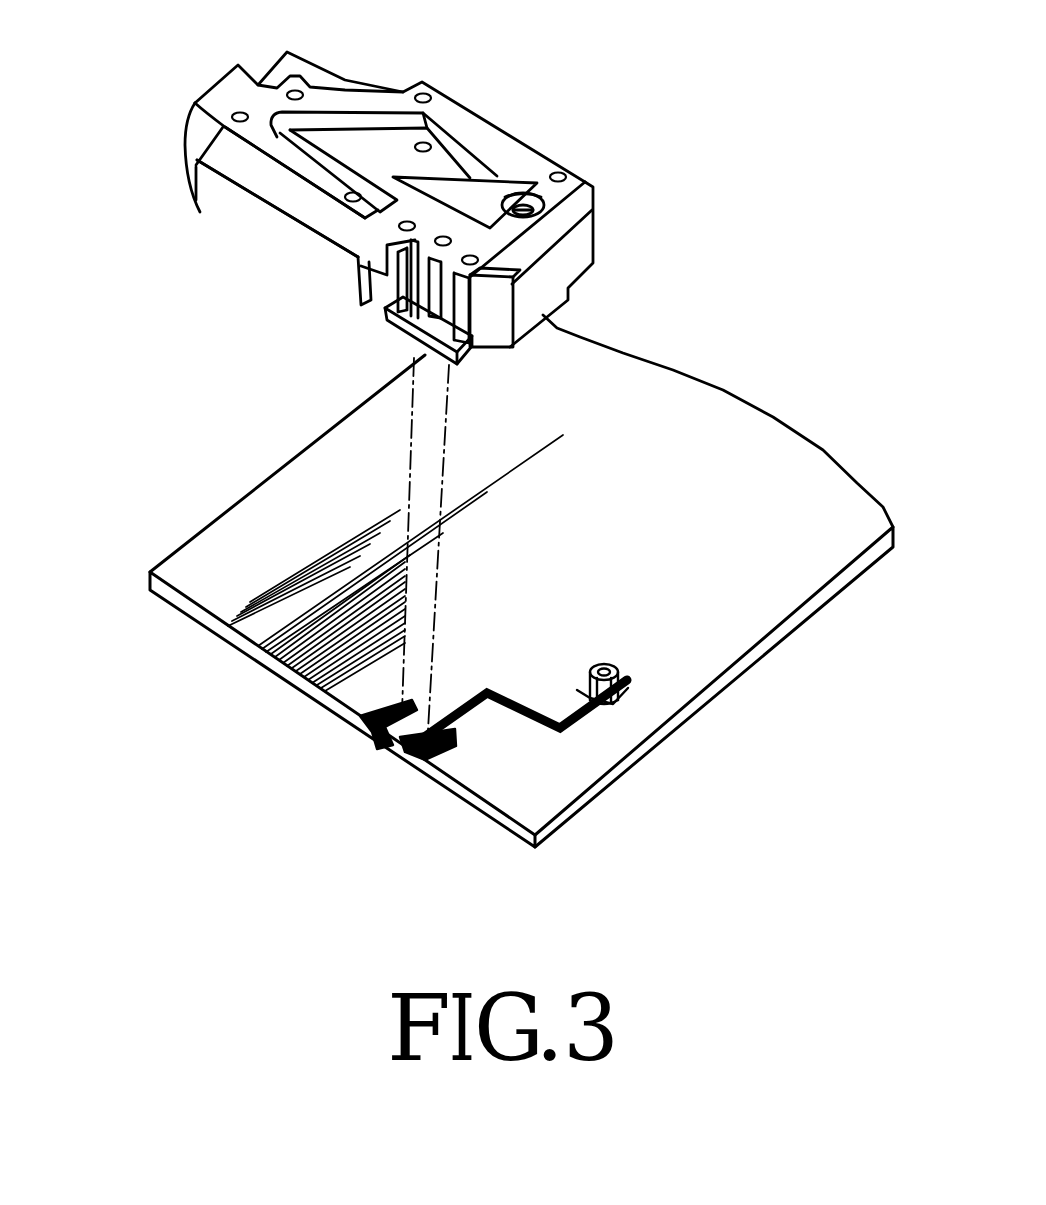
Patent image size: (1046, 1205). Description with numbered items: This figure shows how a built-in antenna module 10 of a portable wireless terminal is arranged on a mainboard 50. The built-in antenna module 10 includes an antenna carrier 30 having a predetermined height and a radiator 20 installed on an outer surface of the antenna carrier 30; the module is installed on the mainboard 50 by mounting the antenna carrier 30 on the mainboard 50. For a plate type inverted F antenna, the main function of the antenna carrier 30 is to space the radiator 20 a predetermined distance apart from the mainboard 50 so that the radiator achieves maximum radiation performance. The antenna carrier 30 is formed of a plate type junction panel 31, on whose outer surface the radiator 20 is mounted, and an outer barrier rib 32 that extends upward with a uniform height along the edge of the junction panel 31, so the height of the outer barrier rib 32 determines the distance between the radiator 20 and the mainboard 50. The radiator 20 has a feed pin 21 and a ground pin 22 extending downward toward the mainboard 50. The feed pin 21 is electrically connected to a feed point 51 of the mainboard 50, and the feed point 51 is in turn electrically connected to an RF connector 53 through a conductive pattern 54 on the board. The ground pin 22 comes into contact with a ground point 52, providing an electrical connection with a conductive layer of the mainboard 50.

The built-in antenna module 10 is at (615, 208).
The radiator 20 is at (532, 160).
The feed pin 21 is at (407, 342).
The ground pin 22 is at (387, 317).
The antenna carrier 30 is at (223, 210).
The junction panel 31 is at (496, 178).
The outer barrier rib 32 is at (270, 248).
The mainboard 50 is at (193, 582).
The feed point 51 is at (427, 763).
The ground point 52 is at (370, 727).
The RF connector 53 is at (630, 683).
The conductive pattern 54 is at (580, 720).